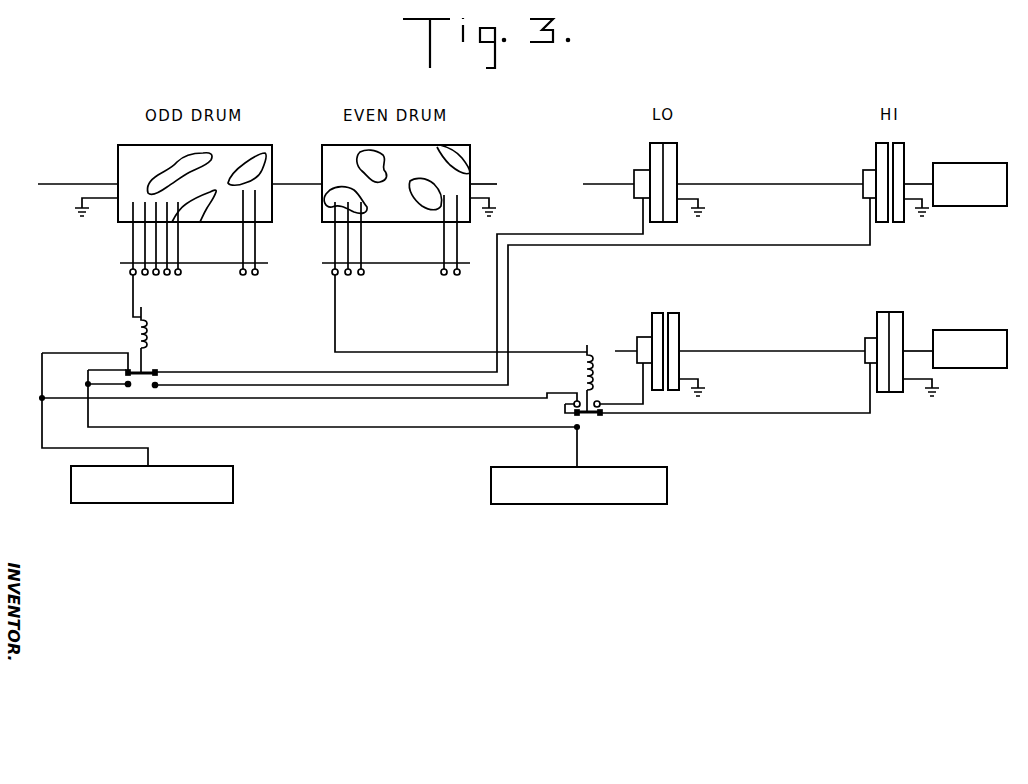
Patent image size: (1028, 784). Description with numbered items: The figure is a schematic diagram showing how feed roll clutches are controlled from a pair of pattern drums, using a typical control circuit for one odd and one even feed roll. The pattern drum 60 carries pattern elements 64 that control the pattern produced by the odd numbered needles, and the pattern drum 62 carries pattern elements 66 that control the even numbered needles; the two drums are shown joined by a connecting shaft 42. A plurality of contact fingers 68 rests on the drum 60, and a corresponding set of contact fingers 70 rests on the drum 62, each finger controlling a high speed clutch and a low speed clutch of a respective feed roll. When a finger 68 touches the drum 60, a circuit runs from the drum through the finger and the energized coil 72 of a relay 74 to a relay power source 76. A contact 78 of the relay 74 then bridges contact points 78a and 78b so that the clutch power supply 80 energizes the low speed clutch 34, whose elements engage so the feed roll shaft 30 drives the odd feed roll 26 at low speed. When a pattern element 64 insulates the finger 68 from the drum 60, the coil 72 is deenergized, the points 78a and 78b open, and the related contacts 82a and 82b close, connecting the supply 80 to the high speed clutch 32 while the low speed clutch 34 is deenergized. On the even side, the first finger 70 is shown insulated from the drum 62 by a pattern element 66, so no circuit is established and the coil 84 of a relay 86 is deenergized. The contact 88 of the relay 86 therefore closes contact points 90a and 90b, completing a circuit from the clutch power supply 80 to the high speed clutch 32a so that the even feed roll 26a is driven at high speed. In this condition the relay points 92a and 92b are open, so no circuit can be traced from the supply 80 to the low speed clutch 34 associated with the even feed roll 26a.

The odd feed roll 26 is at (966, 163).
The even feed roll 26a is at (972, 330).
The feed roll shaft 30 is at (773, 182).
The high speed clutch 32 is at (881, 158).
The high speed clutch 32a is at (882, 321).
The low speed clutch 34 is at (672, 158).
The drum connecting shaft 42 is at (293, 181).
The pattern drum 60 is at (265, 145).
The pattern drum 62 is at (470, 150).
The pattern element 64 is at (164, 182).
The pattern element 66 is at (330, 197).
The contact fingers 68 is at (132, 238).
The contact fingers 70 is at (335, 240).
The coil 72 is at (147, 329).
The relay 74 is at (144, 366).
The relay power source 76 is at (235, 490).
The contact 78 is at (137, 375).
The contact point 78a is at (126, 365).
The contact point 78b is at (158, 370).
The clutch power supply 80 is at (668, 490).
The relay contact 82a is at (127, 384).
The relay contact 82b is at (156, 387).
The coil 84 is at (590, 362).
The relay 86 is at (584, 346).
The contact 88 is at (590, 415).
The contact point 90a is at (576, 414).
The contact point 90b is at (600, 414).
The relay point 92a is at (576, 401).
The relay point 92b is at (600, 402).